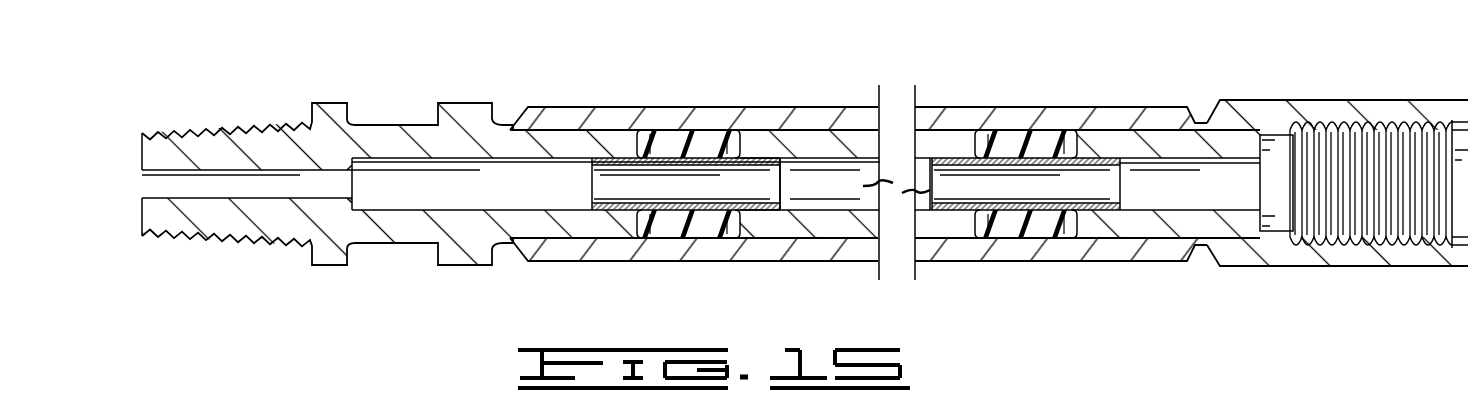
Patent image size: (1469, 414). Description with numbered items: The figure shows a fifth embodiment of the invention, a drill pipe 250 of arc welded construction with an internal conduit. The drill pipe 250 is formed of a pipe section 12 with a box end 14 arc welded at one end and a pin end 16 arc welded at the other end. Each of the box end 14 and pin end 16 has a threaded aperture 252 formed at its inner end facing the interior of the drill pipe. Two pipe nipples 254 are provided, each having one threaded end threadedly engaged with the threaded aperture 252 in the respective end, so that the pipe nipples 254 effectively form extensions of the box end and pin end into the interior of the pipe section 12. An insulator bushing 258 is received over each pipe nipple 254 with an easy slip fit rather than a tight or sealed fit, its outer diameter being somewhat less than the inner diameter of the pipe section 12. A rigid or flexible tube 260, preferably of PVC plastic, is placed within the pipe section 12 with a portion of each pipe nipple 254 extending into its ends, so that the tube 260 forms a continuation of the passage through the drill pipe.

The pipe section 12 is at (823, 250).
The box end 14 is at (1302, 98).
The pin end 16 is at (325, 103).
The drill pipe 250 is at (628, 107).
The threaded aperture 252 is at (613, 212).
The pipe nipple 254 is at (697, 212).
The insulator bushing 258 is at (673, 142).
The rigid or flexible tube 260 is at (797, 142).